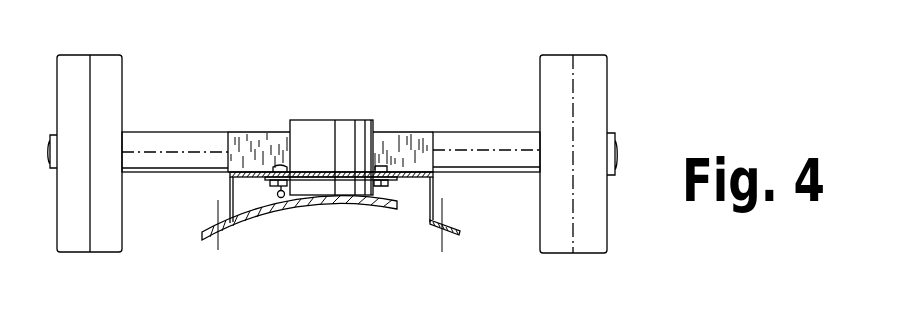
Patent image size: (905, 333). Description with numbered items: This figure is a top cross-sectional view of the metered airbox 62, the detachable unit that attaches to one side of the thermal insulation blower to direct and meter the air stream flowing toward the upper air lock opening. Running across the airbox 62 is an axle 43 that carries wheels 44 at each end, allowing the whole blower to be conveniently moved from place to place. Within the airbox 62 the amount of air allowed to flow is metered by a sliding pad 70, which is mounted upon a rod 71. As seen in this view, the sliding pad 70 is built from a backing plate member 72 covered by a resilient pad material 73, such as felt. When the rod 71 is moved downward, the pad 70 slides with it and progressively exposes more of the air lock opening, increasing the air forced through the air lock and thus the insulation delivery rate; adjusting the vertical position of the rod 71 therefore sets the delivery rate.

The wheels 44 is at (110, 55).
The axle 43 is at (172, 132).
The metered airbox 62 is at (532, 42).
The sliding pad 70 is at (366, 218).
The rod 71 is at (278, 190).
The backing plate member 72 is at (385, 200).
The resilient pad material 73 is at (265, 216).